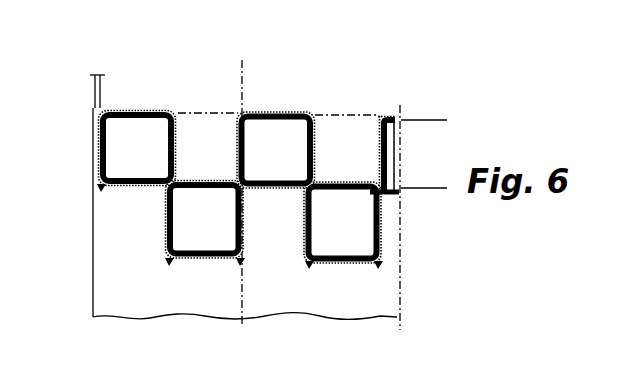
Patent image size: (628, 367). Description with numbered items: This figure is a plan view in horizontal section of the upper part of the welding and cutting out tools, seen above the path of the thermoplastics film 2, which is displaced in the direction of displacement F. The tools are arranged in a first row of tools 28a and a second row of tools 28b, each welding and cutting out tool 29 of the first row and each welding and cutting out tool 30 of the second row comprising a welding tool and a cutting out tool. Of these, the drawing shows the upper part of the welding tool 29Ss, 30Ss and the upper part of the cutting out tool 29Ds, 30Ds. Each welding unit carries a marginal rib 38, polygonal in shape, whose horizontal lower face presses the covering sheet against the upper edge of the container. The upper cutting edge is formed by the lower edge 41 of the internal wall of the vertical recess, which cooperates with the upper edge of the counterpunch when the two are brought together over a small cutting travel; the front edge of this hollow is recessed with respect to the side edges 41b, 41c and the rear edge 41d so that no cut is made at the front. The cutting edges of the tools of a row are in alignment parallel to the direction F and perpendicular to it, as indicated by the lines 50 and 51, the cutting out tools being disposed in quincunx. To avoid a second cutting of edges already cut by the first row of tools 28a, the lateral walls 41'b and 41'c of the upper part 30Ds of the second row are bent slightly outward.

The direction of displacement F is at (68, 38).
The thermoplastics film 2 is at (107, 294).
The first row of tools 28a is at (406, 242).
The second row of tools 28b is at (408, 150).
The welding and cutting out tool 29 is at (197, 270).
The upper part of welding tool 29Ss is at (202, 250).
The upper part of cutting out tool 29Ds is at (245, 228).
The welding and cutting out tool 30 is at (135, 86).
The upper part of welding tool 30Ss is at (110, 154).
The upper part of cutting out tool 30Ds is at (158, 106).
The marginal rib 38 is at (168, 161).
The lower edge of internal wall 41 is at (109, 195).
The side edge 41b is at (307, 237).
The side edge 41c is at (385, 221).
The rear edge 41d is at (345, 182).
The lateral wall 41'b is at (214, 126).
The lateral wall 41'c is at (337, 105).
The alignment line 50 is at (242, 70).
The alignment line 51 is at (425, 120).